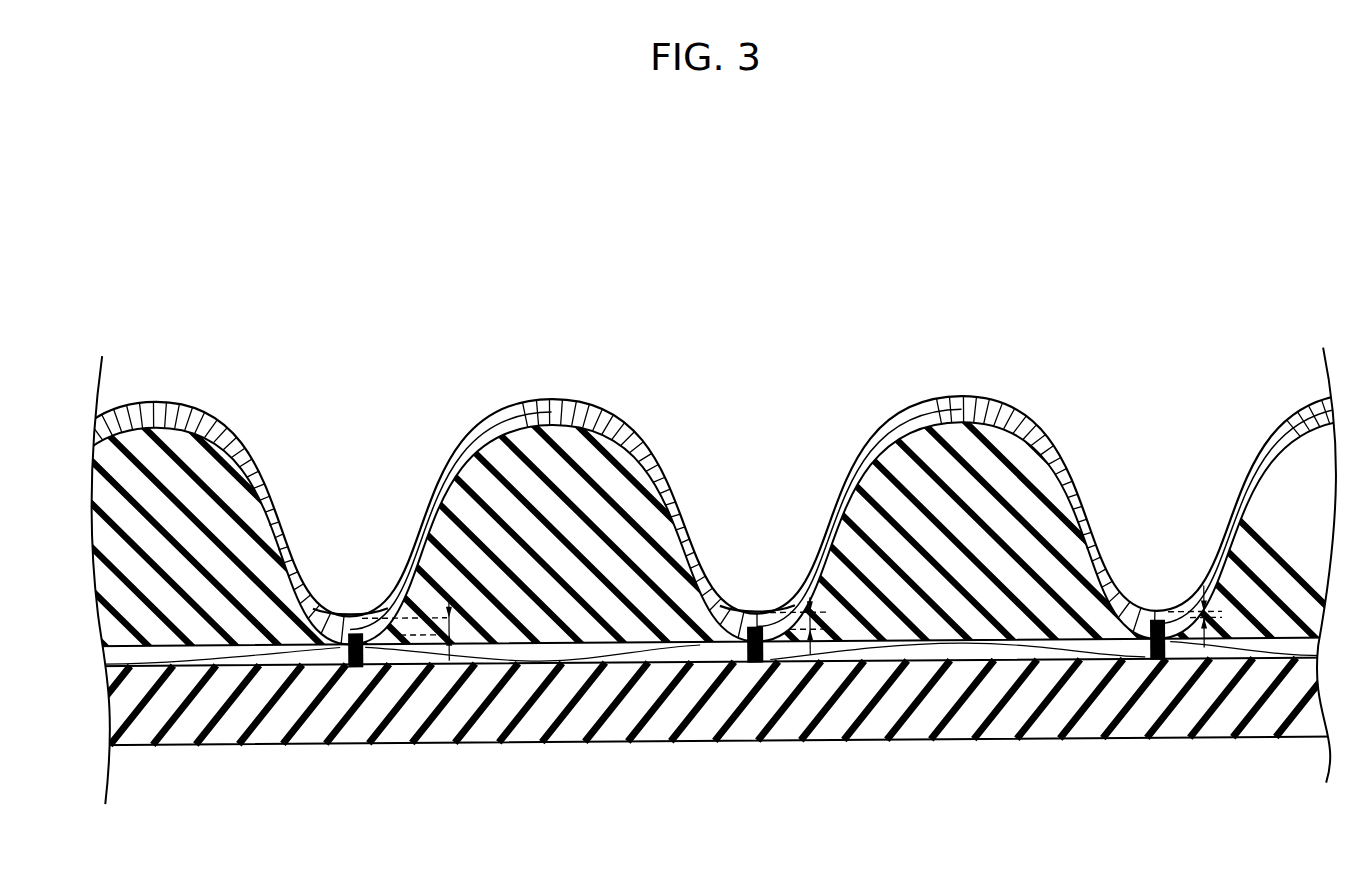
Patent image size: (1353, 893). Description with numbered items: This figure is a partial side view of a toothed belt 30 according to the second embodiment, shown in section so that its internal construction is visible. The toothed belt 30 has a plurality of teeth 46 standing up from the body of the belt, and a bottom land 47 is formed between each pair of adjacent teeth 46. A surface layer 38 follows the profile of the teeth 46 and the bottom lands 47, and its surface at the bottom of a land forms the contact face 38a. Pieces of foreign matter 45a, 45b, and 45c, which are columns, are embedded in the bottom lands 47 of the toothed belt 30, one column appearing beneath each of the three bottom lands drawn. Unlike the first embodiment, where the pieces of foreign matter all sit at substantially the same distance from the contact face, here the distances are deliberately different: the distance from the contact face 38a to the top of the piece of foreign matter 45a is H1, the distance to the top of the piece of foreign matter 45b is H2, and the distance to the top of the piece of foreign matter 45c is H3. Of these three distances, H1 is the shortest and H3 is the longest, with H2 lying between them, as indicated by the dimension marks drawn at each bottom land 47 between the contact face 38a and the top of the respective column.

The toothed belt 30 is at (636, 376).
The coating layer 38 is at (672, 544).
The contact face 38a is at (797, 606).
The teeth 46 is at (160, 465).
The bottom land 47 is at (356, 614).
The piece of foreign matter 45a is at (1144, 675).
The piece of foreign matter 45b is at (748, 677).
The piece of foreign matter 45c is at (350, 678).
The distance H1 is at (1216, 616).
The distance H2 is at (815, 626).
The distance H3 is at (435, 631).